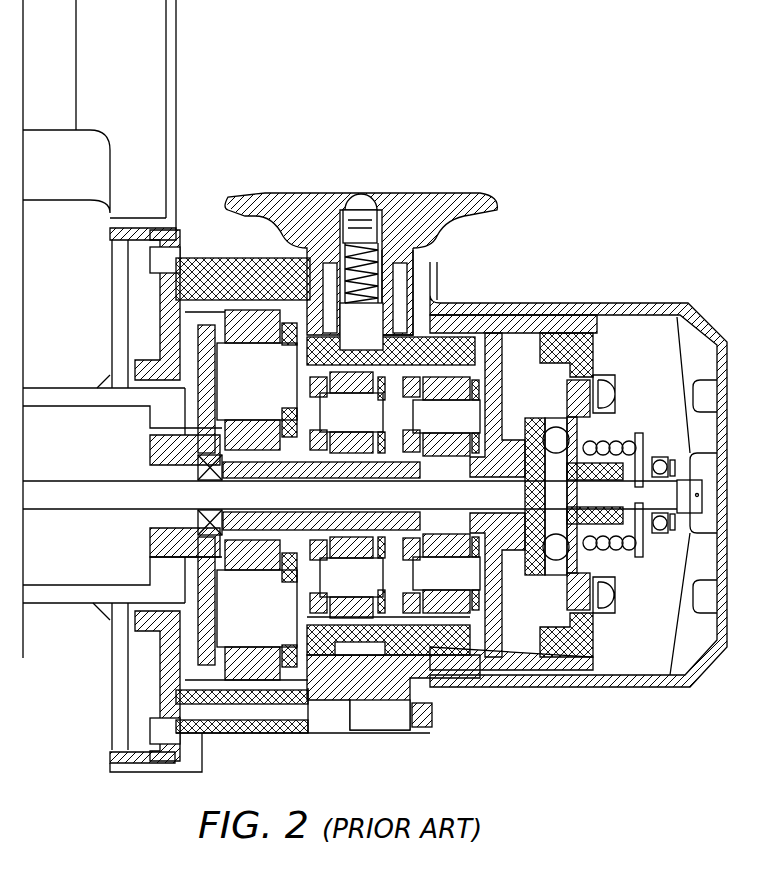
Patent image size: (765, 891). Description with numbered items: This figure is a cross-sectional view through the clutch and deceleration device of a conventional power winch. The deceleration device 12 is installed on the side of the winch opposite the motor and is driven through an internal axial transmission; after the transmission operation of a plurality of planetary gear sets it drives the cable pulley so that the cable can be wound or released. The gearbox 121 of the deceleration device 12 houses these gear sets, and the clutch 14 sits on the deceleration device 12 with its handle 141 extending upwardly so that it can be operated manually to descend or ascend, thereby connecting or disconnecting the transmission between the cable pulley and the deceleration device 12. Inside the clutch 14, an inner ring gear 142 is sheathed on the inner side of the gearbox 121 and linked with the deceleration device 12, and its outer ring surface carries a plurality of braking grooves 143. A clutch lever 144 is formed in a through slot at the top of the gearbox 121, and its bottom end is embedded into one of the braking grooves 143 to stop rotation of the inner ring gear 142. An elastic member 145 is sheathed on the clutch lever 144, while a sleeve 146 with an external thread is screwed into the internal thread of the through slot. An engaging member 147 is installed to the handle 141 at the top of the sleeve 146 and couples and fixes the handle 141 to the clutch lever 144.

The deceleration device 12 is at (578, 465).
The gearbox 121 is at (533, 330).
The clutch 14 is at (361, 232).
The handle 141 is at (441, 198).
The inner ring gear 142 is at (455, 348).
The braking groove 143 is at (360, 648).
The clutch lever 144 is at (366, 233).
The elastic member 145 is at (342, 268).
The sleeve 146 is at (388, 283).
The engaging member 147 is at (360, 203).